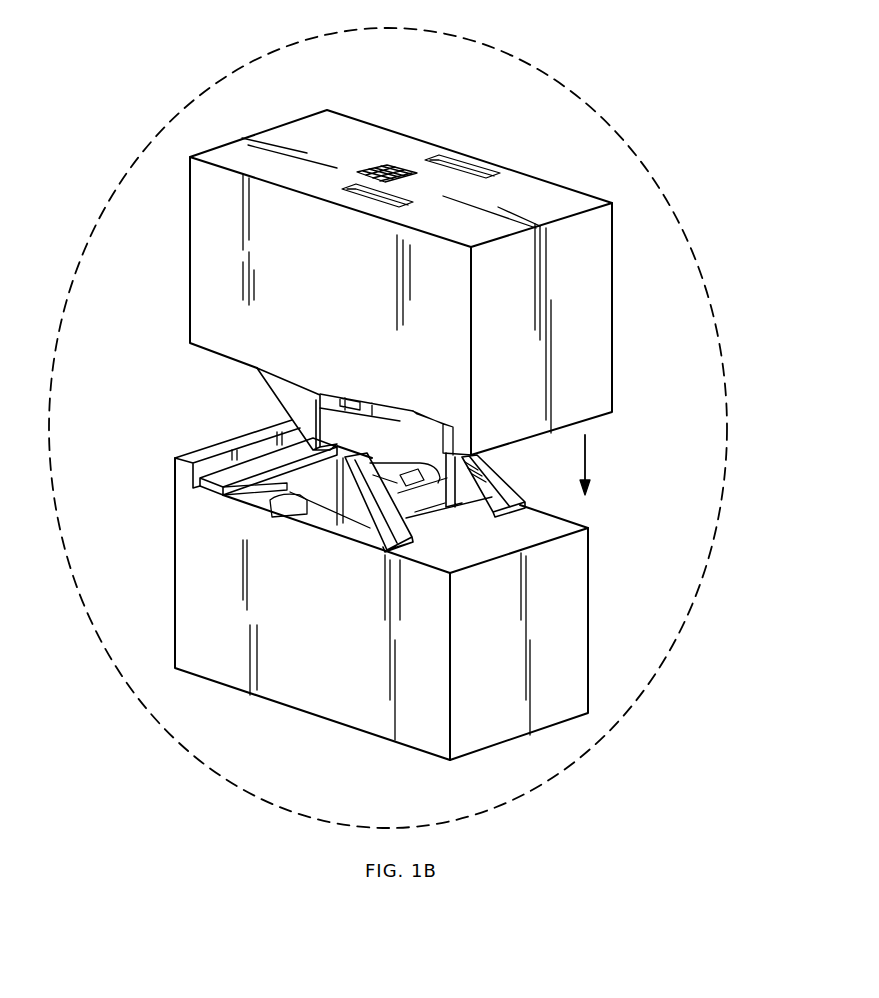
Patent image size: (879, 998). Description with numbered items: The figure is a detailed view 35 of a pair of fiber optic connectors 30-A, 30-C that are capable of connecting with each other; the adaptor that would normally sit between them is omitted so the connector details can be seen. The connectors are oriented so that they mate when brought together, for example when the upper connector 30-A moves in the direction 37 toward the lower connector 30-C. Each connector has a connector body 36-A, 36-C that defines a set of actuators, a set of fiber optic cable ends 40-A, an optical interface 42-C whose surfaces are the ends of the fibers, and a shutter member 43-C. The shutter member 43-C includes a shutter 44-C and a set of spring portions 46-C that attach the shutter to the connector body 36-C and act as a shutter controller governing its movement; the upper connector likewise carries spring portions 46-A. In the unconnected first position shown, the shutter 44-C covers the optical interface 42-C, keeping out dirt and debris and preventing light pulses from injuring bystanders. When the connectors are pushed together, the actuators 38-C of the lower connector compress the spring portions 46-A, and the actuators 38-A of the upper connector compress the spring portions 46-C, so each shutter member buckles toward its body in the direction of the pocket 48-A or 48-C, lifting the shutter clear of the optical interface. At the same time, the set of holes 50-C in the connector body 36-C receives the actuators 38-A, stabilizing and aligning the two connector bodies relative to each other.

The connector 30-A is at (357, 260).
The connector 30-C is at (379, 597).
The detailed view 35 is at (627, 708).
The connector body 36-A is at (202, 325).
The connector body 36-C is at (562, 608).
The direction 37 is at (585, 461).
The actuators 38-A is at (293, 395).
The actuators 38-C is at (357, 515).
The set of fiber optic cable ends 40-A is at (398, 165).
The optical interface 42-C is at (444, 526).
The shutter member 43-C is at (328, 498).
The shutter 44-C is at (470, 487).
The set of spring portions 46-A is at (390, 400).
The set of spring portions 46-C is at (270, 508).
The pocket 48-A is at (412, 410).
The pocket 48-C is at (250, 500).
The set of holes 50-C is at (273, 508).